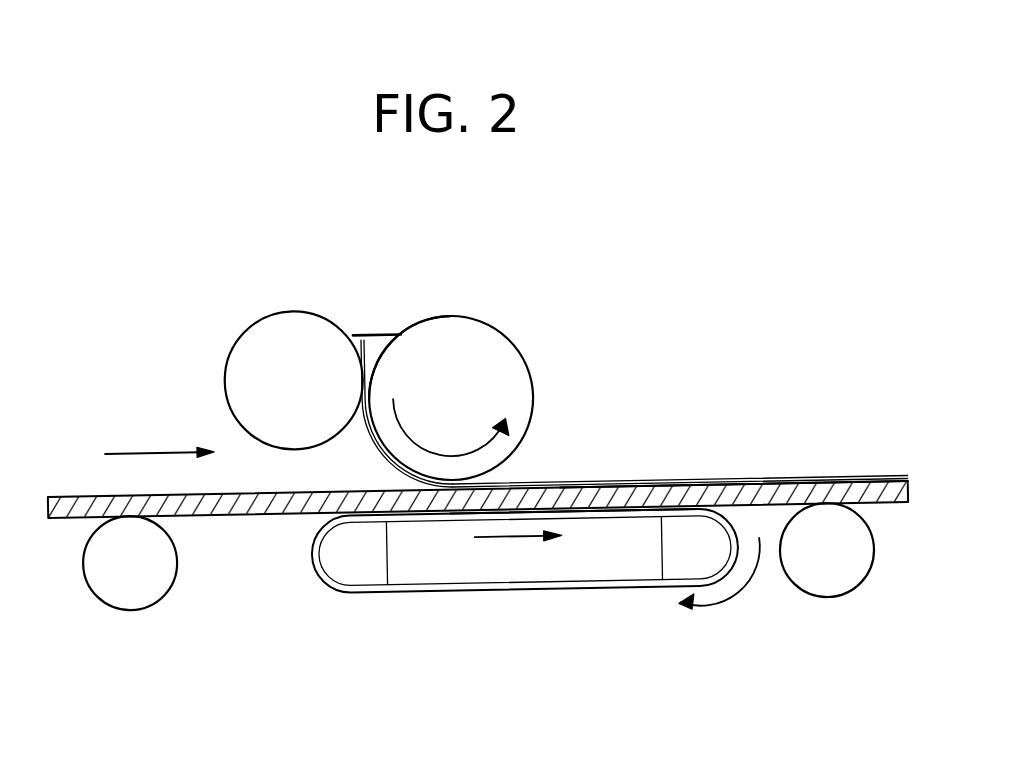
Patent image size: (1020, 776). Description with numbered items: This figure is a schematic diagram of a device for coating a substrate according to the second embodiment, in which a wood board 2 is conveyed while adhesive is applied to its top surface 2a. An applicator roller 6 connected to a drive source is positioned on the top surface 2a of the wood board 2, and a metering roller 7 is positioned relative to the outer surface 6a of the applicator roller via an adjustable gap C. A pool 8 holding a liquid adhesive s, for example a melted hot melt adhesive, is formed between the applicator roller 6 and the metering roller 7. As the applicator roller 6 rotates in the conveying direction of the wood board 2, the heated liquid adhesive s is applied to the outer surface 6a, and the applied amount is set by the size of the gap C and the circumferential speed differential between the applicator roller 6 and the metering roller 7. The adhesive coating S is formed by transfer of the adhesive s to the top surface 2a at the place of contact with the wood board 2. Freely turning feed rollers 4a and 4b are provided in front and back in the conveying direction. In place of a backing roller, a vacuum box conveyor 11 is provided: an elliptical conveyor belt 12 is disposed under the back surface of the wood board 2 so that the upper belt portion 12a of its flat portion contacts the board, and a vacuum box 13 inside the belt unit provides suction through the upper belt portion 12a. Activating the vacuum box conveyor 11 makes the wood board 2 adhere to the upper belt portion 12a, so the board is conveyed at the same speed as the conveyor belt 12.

The wood board 2 is at (885, 480).
The top surface 2a is at (703, 481).
The adhesive coating S is at (813, 477).
The liquid adhesive s is at (380, 335).
The pool 8 is at (363, 333).
The metering roller 7 is at (227, 372).
The applicator roller 6 is at (521, 353).
The outer surface 6a is at (420, 325).
The gap C is at (353, 433).
The feed roller 4a is at (127, 610).
The feed roller 4b is at (822, 598).
The conveyor belt 12 is at (512, 589).
The upper belt portion 12a is at (605, 511).
The vacuum box 13 is at (592, 568).
The vacuum box conveyor 11 is at (340, 606).